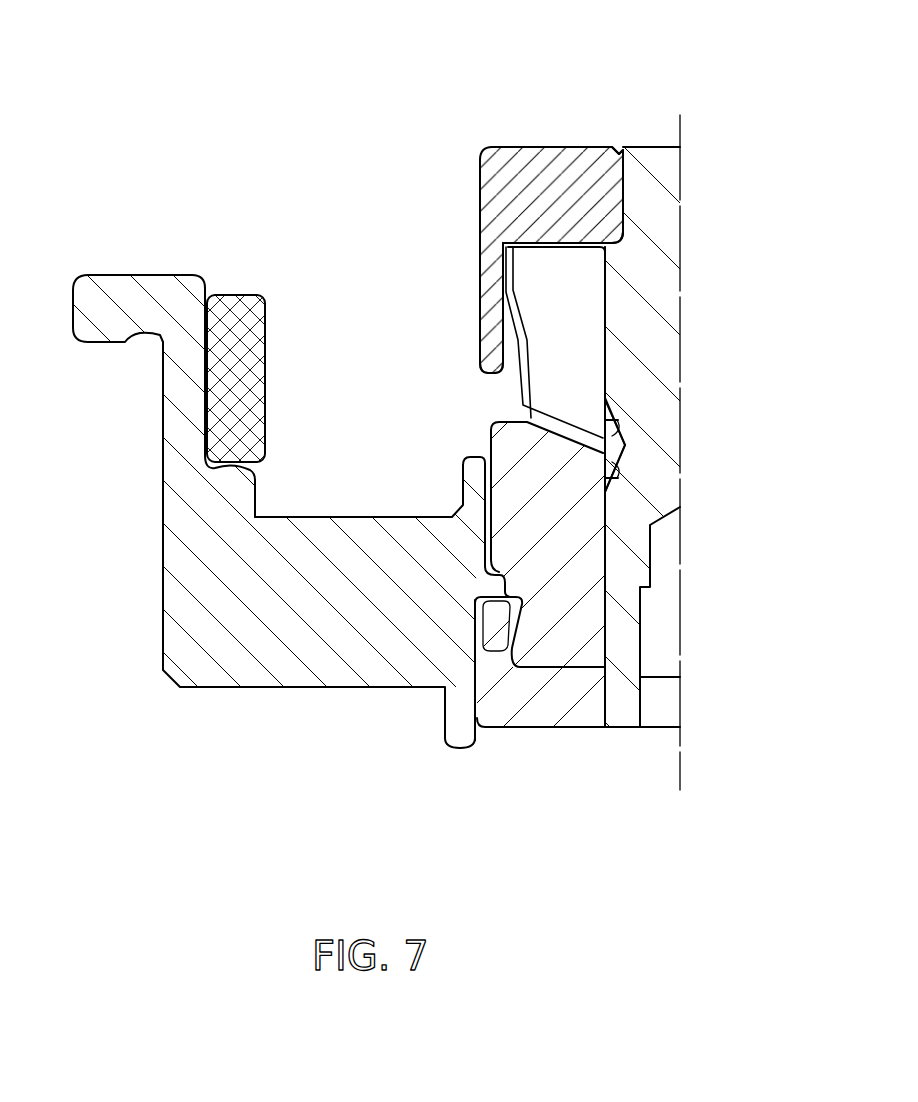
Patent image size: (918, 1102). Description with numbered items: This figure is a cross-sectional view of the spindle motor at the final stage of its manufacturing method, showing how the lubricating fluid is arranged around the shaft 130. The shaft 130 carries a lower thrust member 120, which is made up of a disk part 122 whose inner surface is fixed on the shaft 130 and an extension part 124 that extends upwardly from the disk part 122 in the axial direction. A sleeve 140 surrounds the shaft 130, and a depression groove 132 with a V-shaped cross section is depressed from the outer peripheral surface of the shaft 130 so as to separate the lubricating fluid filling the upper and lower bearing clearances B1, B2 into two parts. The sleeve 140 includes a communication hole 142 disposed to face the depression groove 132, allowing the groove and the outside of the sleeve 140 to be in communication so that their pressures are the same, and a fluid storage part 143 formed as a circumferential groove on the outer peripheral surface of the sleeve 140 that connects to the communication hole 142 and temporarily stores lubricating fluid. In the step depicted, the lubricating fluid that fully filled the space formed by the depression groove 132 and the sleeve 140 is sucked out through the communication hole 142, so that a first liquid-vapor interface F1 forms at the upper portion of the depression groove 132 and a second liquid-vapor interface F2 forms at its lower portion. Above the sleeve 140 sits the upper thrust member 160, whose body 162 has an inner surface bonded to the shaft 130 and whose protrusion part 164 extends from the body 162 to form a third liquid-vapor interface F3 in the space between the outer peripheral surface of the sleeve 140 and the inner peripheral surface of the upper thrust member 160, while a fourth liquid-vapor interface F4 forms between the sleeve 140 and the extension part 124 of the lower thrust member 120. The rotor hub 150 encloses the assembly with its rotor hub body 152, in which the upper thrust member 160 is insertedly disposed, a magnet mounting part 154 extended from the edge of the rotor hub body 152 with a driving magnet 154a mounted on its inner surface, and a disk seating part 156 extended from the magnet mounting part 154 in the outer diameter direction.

The lower thrust member 120 is at (505, 194).
The disk part 122 is at (517, 178).
The extension part 124 is at (487, 312).
The shaft 130 is at (699, 371).
The depression groove 132 is at (623, 440).
The sleeve 140 is at (509, 535).
The communication hole 142 is at (527, 415).
The fluid storage part 143 is at (523, 420).
The rotor hub 150 is at (285, 506).
The rotor hub body 152 is at (103, 333).
The magnet mounting part 154 is at (177, 378).
The driving magnet 154a is at (235, 303).
The disk seating part 156 is at (250, 637).
The upper thrust member 160 is at (501, 744).
The body 162 is at (507, 703).
The protrusion part 164 is at (490, 640).
The upper bearing clearance B1 is at (603, 553).
The lower bearing clearance B2 is at (605, 313).
The first liquid-vapor interface F1 is at (622, 468).
The second liquid-vapor interface F2 is at (623, 432).
The third liquid-vapor interface F3 is at (513, 645).
The fourth liquid-vapor interface F4 is at (505, 328).